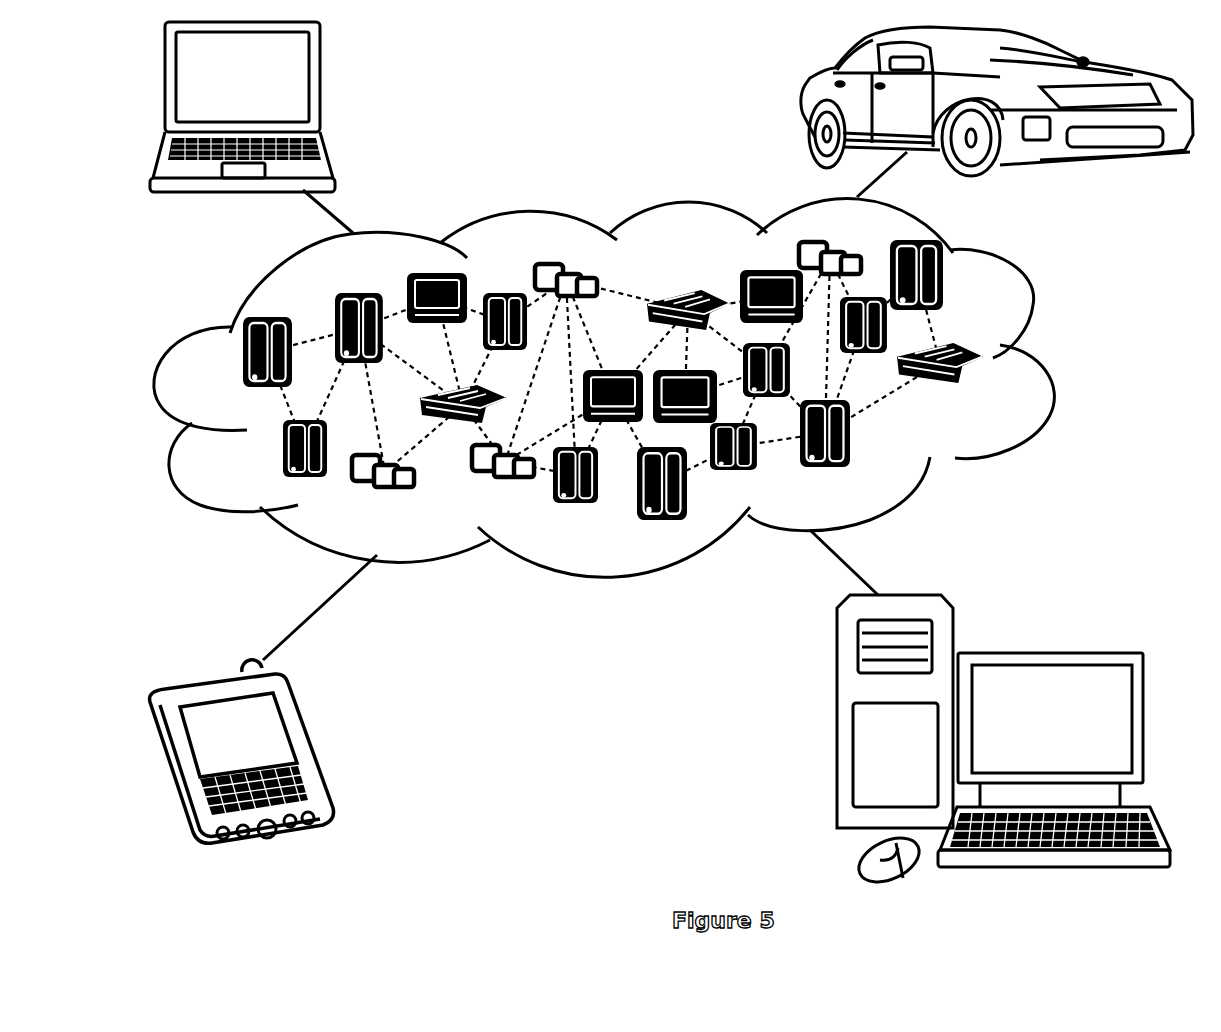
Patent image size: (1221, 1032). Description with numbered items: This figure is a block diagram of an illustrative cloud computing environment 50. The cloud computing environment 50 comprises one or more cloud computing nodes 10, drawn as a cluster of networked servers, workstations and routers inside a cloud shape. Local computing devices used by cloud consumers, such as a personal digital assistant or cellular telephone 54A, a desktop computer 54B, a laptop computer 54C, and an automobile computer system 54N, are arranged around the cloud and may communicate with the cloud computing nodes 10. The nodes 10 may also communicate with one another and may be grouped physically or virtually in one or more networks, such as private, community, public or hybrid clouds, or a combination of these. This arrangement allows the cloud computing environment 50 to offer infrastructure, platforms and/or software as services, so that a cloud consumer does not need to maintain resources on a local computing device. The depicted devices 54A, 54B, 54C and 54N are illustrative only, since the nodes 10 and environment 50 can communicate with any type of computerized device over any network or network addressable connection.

The cloud computing environment 50 is at (1050, 360).
The cloud computing nodes 10 is at (674, 380).
The personal digital assistant or cellular telephone 54A is at (306, 750).
The desktop computer 54B is at (1047, 652).
The laptop computer 54C is at (321, 84).
The automobile computer system 54N is at (803, 99).